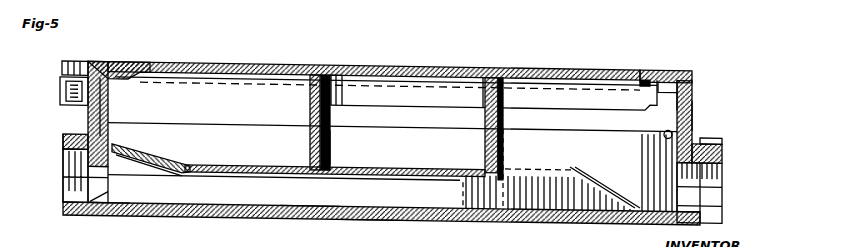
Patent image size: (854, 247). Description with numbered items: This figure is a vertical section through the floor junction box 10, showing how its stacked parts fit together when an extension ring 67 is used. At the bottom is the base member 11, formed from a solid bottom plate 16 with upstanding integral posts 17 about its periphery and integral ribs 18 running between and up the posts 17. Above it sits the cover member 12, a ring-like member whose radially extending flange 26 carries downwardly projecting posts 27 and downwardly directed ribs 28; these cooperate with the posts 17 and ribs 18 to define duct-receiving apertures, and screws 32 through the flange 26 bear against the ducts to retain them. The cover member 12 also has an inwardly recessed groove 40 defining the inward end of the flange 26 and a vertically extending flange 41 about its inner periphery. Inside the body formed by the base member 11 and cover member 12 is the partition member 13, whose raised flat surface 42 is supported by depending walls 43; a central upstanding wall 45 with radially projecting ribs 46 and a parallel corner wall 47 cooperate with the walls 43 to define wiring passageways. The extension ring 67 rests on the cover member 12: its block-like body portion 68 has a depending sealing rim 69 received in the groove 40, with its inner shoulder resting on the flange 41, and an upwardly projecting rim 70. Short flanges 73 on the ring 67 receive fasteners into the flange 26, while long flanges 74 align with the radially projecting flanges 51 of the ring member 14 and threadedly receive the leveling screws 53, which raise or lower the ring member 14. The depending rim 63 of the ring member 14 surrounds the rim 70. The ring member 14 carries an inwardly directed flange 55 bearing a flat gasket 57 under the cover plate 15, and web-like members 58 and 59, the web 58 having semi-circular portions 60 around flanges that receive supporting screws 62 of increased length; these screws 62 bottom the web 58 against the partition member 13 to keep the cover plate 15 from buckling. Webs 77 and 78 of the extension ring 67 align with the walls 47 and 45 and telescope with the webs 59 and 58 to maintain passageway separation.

The junction box 10 is at (737, 65).
The base member 11 is at (703, 213).
The cover member 12 is at (722, 141).
The partition member 13 is at (385, 171).
The ring member 14 is at (680, 59).
The cover plate 15 is at (557, 61).
The bottom plate 16 is at (363, 226).
The posts 17 is at (705, 189).
The ribs 18 is at (100, 194).
The radially extending flange 26 is at (66, 135).
The downwardly projecting posts 27 is at (80, 162).
The downwardly directed ribs 28 is at (722, 155).
The screws 32 is at (66, 132).
The inwardly recessed groove 40 is at (693, 124).
The vertically extending flange 41 is at (662, 129).
The raised flat surface 42 is at (232, 158).
The vertically depending walls 43 is at (308, 198).
The upstanding wall 45 is at (308, 143).
The radially projecting ribs 46 is at (330, 145).
The upstanding wall 47 is at (485, 140).
The radially projecting flanges 51 is at (95, 59).
The leveling screws 53 is at (62, 68).
The inwardly directed flange 55 is at (645, 65).
The flat gasket 57 is at (650, 60).
The web-like member 58 is at (418, 83).
The web-like member 59 is at (587, 97).
The semi-circular portions 60 is at (345, 89).
The supporting screws 62 is at (330, 116).
The depending rim 63 is at (695, 76).
The extension ring 67 is at (690, 94).
The block-like body portion 68 is at (90, 111).
The sealing rim 69 is at (108, 132).
The upwardly projecting rim 70 is at (128, 60).
The short flanges 73 is at (722, 129).
The long flanges 74 is at (62, 89).
The web-like member 77 is at (485, 113).
The web-like member 78 is at (310, 111).